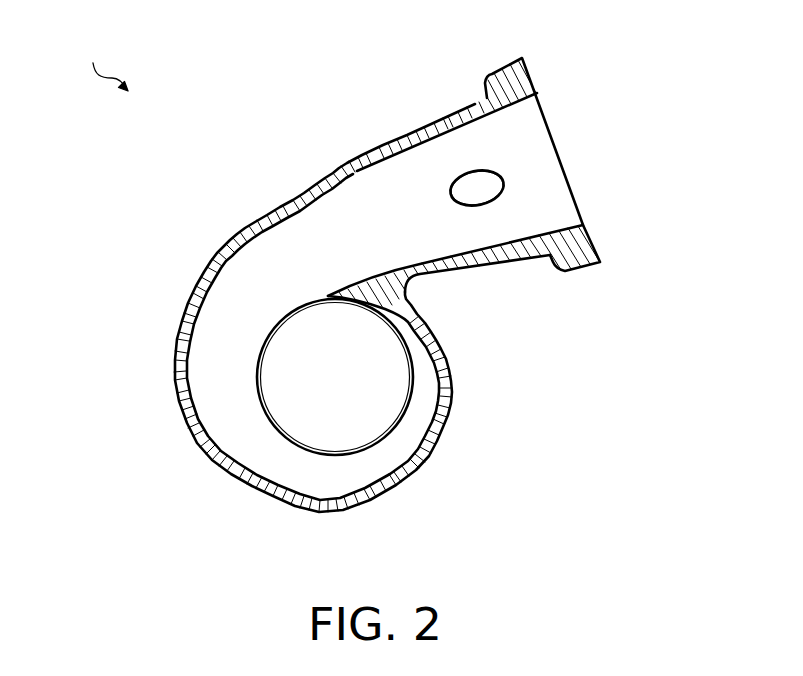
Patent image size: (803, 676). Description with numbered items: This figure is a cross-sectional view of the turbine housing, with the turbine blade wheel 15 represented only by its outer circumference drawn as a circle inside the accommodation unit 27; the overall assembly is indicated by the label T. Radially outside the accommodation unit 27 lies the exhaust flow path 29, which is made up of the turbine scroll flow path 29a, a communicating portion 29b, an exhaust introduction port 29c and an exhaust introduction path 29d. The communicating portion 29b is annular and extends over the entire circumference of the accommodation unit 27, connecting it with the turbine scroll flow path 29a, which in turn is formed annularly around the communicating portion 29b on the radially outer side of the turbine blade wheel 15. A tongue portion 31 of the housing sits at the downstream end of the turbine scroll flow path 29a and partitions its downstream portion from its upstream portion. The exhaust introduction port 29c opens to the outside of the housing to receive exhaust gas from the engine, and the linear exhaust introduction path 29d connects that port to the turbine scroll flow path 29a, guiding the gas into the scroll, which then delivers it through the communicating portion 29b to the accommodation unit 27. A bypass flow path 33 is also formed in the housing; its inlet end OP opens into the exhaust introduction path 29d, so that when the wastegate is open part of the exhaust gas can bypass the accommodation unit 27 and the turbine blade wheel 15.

The blower unit T is at (82, 61).
The turbine blade wheel 15 is at (405, 412).
The accommodation unit 27 is at (320, 391).
The exhaust flow path 29 is at (307, 213).
The turbine scroll flow path 29a is at (232, 422).
The communicating portion 29b is at (412, 448).
The exhaust introduction port 29c is at (551, 137).
The exhaust introduction path 29d is at (403, 200).
The tongue portion 31 is at (313, 305).
The bypass flow path 33 is at (472, 168).
The inlet end OP is at (488, 170).